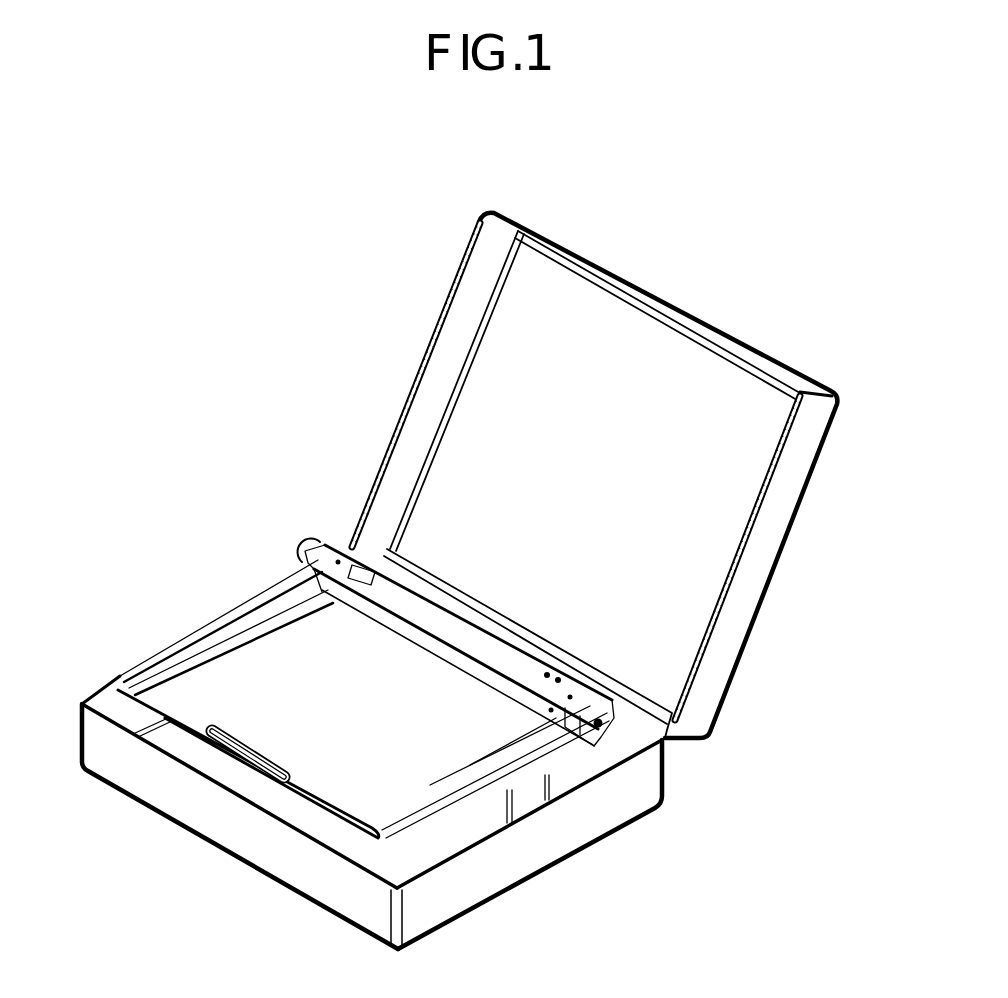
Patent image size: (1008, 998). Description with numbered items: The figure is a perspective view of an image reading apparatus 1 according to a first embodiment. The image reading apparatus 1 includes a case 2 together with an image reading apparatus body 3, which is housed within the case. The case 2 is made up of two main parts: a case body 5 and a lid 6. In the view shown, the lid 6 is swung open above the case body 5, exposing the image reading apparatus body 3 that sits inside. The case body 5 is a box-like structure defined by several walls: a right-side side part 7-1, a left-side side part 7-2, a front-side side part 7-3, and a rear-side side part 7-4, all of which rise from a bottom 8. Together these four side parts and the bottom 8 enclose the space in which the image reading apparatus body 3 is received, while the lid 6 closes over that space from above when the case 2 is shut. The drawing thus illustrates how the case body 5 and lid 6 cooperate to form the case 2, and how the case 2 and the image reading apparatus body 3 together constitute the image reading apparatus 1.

The image reading apparatus 1 is at (791, 177).
The case 2 is at (597, 468).
The image reading apparatus body 3 is at (347, 697).
The case body 5 is at (665, 788).
The lid 6 is at (810, 382).
The right-side side part 7-1 is at (550, 850).
The left-side side part 7-2 is at (96, 698).
The front-side side part 7-3 is at (252, 848).
The rear-side side part 7-4 is at (633, 741).
The bottom 8 is at (383, 867).